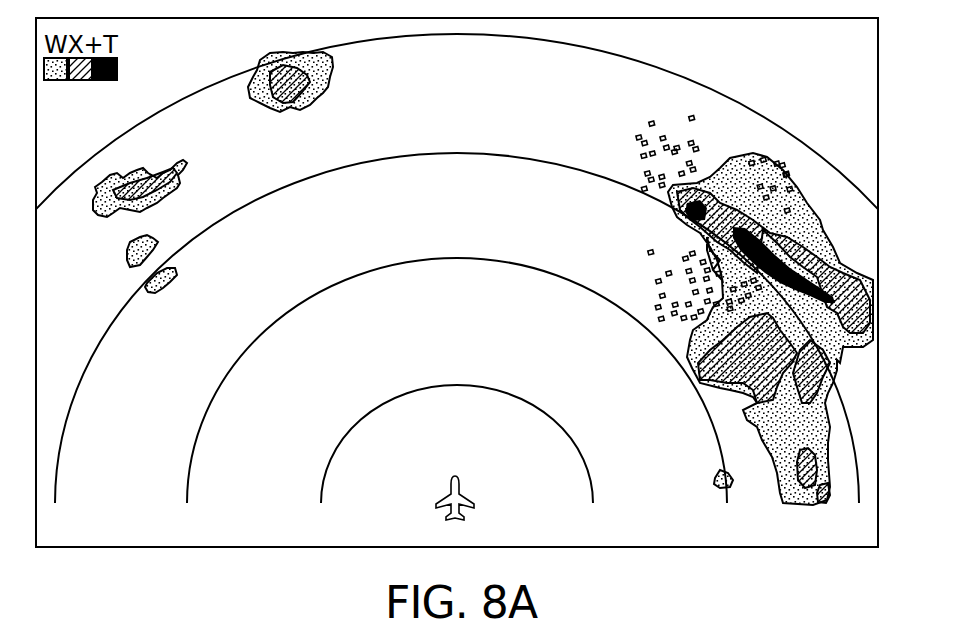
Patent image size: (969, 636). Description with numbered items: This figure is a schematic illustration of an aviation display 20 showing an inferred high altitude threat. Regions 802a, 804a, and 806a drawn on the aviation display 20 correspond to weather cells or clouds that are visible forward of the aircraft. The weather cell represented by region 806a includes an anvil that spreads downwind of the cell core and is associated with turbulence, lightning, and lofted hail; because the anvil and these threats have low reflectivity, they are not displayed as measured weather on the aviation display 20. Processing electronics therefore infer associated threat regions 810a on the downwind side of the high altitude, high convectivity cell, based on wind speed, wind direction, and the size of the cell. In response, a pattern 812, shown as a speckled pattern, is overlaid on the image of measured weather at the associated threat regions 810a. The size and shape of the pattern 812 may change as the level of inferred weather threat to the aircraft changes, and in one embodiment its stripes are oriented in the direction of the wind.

The aviation display 20 is at (105, 548).
The region 802a is at (158, 188).
The region 804a is at (285, 90).
The region 806a is at (727, 383).
The associated threat region 810a is at (688, 145).
The pattern 812 is at (675, 153).